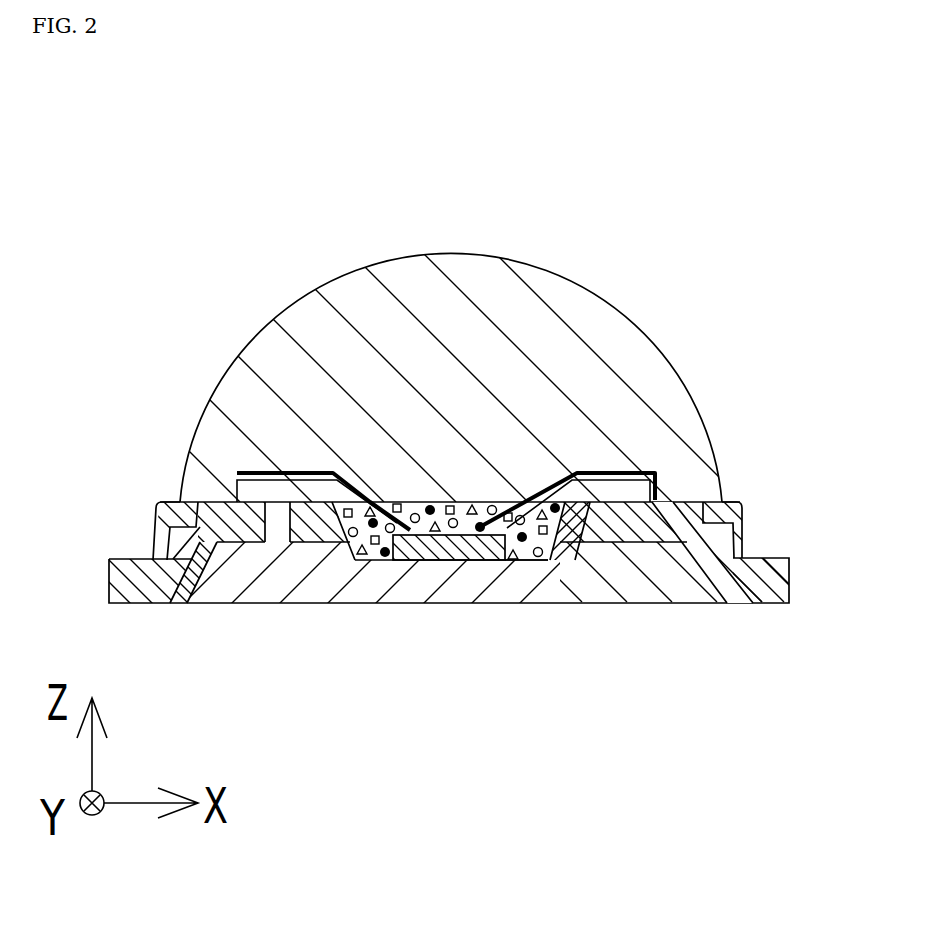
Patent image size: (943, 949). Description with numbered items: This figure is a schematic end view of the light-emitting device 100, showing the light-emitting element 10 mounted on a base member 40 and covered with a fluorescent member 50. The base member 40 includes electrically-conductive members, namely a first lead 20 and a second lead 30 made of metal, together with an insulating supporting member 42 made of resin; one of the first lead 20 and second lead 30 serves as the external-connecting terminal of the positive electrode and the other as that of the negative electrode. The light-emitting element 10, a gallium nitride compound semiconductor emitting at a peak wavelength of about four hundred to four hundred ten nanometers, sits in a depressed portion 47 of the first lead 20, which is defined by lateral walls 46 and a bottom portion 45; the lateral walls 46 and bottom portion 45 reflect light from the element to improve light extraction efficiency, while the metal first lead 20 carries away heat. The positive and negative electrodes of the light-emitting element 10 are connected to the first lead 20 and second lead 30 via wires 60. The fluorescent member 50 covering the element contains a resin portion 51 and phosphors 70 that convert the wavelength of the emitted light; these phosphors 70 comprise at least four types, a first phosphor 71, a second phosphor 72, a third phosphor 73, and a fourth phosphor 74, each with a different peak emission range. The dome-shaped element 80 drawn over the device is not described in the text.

The light-emitting device 100 is at (698, 190).
The light-emitting element 10 is at (435, 563).
The first lead 20 is at (375, 580).
The second lead 30 is at (146, 584).
The base member 40 is at (377, 690).
The supporting member 42 is at (270, 575).
The bottom portion 45 is at (515, 560).
The lateral walls 46 is at (613, 543).
The depressed portion 47 is at (690, 690).
The fluorescent member 50 is at (595, 137).
The resin portion 51 is at (512, 502).
The wires 60 is at (607, 473).
The phosphors 70 is at (477, 203).
The first phosphor 71 is at (373, 520).
The second phosphor 72 is at (397, 508).
The third phosphor 73 is at (430, 510).
The fourth phosphor 74 is at (472, 510).
The lens 80 is at (617, 407).